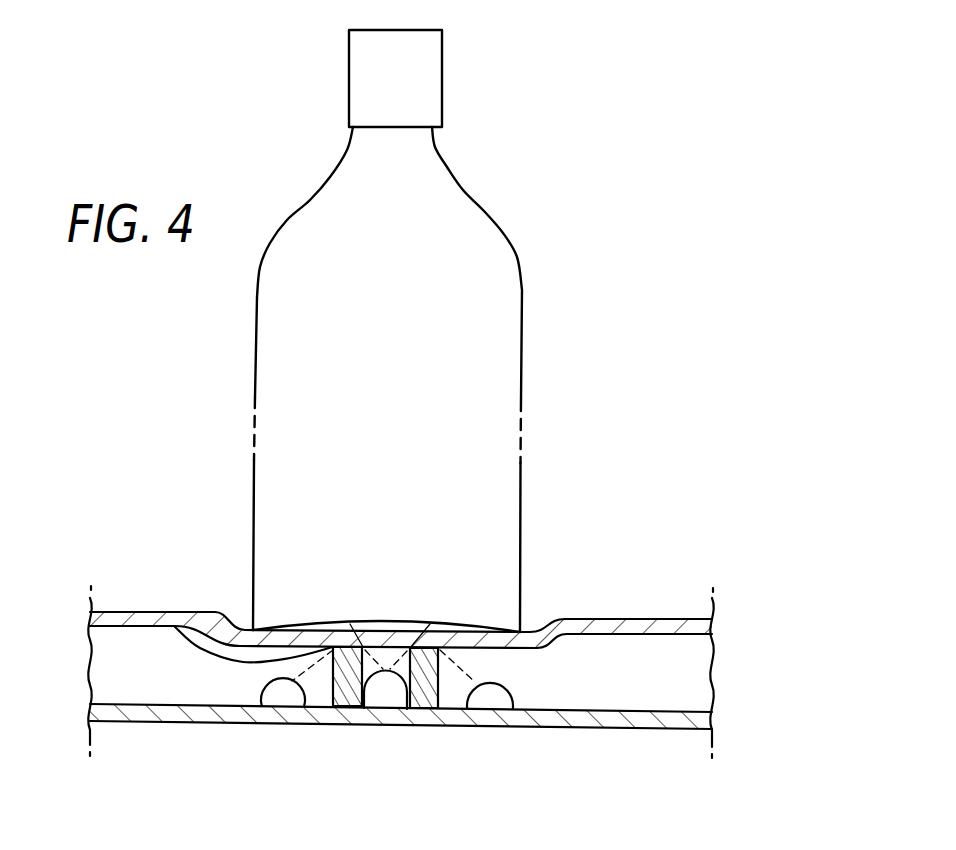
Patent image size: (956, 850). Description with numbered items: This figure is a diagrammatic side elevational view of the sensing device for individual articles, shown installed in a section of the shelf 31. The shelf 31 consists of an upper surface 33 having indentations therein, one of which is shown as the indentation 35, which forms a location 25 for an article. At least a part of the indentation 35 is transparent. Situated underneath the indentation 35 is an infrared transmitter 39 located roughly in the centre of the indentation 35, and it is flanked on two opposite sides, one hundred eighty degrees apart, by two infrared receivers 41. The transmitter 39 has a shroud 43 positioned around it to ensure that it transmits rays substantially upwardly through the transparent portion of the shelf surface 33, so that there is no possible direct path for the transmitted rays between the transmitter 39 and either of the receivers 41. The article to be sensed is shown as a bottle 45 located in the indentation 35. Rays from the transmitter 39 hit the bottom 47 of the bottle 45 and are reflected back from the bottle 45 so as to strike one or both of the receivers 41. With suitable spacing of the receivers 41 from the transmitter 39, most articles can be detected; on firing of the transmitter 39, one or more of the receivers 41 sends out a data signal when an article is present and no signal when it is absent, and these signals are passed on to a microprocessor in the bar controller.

The location 25 is at (540, 572).
The shelf section 31 is at (454, 627).
The upper surface 33 is at (660, 623).
The indentation 35 is at (537, 632).
The infrared transmitter 39 is at (387, 699).
The infrared receivers 41 is at (287, 701).
The shroud 43 is at (425, 682).
The bottle 45 is at (457, 373).
The bottom of the bottle 47 is at (180, 624).